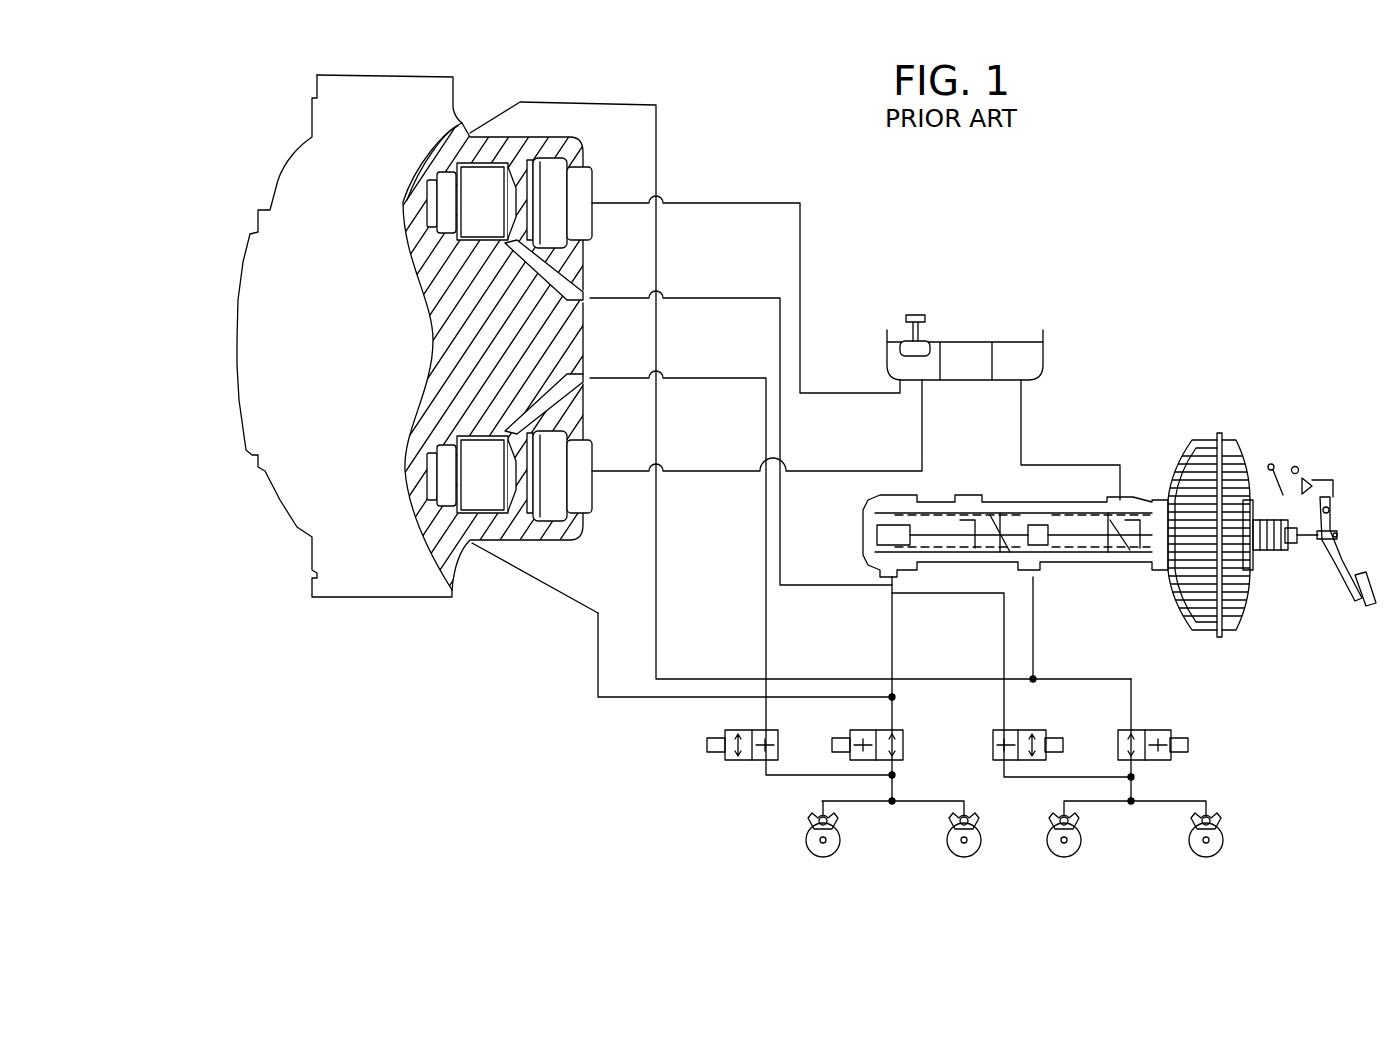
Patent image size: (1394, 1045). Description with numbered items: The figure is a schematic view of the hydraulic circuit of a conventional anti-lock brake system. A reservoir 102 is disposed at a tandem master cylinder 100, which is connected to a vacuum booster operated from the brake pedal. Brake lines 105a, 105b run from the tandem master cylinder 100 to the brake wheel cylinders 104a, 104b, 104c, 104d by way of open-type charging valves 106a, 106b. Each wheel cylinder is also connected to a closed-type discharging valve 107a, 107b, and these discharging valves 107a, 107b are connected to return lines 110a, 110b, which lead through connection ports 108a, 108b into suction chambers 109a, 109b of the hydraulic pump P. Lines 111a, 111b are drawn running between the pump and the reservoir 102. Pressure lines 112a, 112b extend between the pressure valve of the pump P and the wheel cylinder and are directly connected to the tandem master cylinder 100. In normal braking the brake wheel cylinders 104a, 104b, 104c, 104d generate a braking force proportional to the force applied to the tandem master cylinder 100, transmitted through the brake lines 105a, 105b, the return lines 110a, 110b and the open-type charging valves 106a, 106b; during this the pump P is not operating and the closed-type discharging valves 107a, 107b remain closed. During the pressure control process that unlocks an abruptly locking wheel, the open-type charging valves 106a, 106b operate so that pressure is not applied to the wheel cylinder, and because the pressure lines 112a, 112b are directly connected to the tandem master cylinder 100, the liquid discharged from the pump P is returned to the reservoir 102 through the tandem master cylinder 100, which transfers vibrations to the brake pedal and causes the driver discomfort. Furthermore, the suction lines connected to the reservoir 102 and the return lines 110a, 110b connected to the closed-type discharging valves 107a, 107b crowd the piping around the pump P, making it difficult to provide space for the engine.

The pump P is at (265, 385).
The tandem master cylinder 100 is at (1068, 498).
The reservoir 102 is at (1027, 357).
The brake wheel cylinder 104a is at (826, 855).
The brake wheel cylinder 104b is at (963, 857).
The brake wheel cylinder 104c is at (1063, 857).
The brake wheel cylinder 104d is at (1203, 857).
The brake line 105a is at (894, 638).
The brake line 105b is at (1034, 630).
The open-type charging valve 106a is at (903, 741).
The open-type charging valve 106b is at (1163, 737).
The closed-type discharging valve 107a is at (730, 762).
The closed-type discharging valve 107b is at (1038, 737).
The connection port 108a is at (528, 258).
The connection port 108b is at (530, 410).
The suction chamber 109a is at (514, 172).
The suction chamber 109b is at (512, 514).
The return line 110a is at (814, 585).
The return line 110b is at (765, 630).
The return line 111a is at (838, 392).
The return line 111b is at (830, 470).
The pressure line 112a is at (658, 120).
The pressure line 112b is at (597, 702).